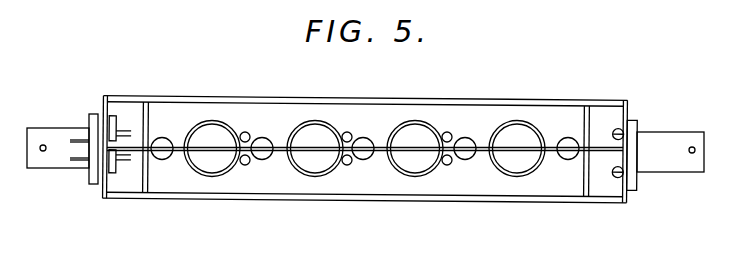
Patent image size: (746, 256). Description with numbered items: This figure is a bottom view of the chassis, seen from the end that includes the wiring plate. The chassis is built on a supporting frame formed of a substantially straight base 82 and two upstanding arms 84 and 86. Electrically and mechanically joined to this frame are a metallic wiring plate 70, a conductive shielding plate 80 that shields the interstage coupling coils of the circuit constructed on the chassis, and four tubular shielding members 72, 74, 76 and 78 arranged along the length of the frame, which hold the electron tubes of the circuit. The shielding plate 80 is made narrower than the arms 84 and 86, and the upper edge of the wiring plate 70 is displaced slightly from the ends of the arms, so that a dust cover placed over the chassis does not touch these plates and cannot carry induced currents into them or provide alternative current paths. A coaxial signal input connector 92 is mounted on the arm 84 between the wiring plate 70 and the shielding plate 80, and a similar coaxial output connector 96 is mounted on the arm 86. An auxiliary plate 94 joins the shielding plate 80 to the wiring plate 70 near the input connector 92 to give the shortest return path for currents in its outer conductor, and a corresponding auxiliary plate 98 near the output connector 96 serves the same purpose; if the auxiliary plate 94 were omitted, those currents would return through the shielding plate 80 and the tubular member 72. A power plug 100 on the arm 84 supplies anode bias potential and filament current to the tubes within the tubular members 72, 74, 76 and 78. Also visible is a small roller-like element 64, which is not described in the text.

The small roller 64 is at (373, 138).
The wiring plate 70 is at (280, 150).
The tubular shielding member 72 is at (220, 122).
The tubular shielding member 74 is at (330, 121).
The tubular shielding member 76 is at (428, 122).
The tubular shielding member 78 is at (527, 123).
The conductive shielding plate 80 is at (482, 182).
The base 82 is at (437, 201).
The upstanding arm 84 is at (98, 188).
The upstanding arm 86 is at (634, 112).
The coaxial signal input connector 92 is at (55, 168).
The auxiliary plate 94 is at (148, 113).
The coaxial output connector 96 is at (662, 132).
The auxiliary plate 98 is at (593, 113).
The power plug 100 is at (91, 115).